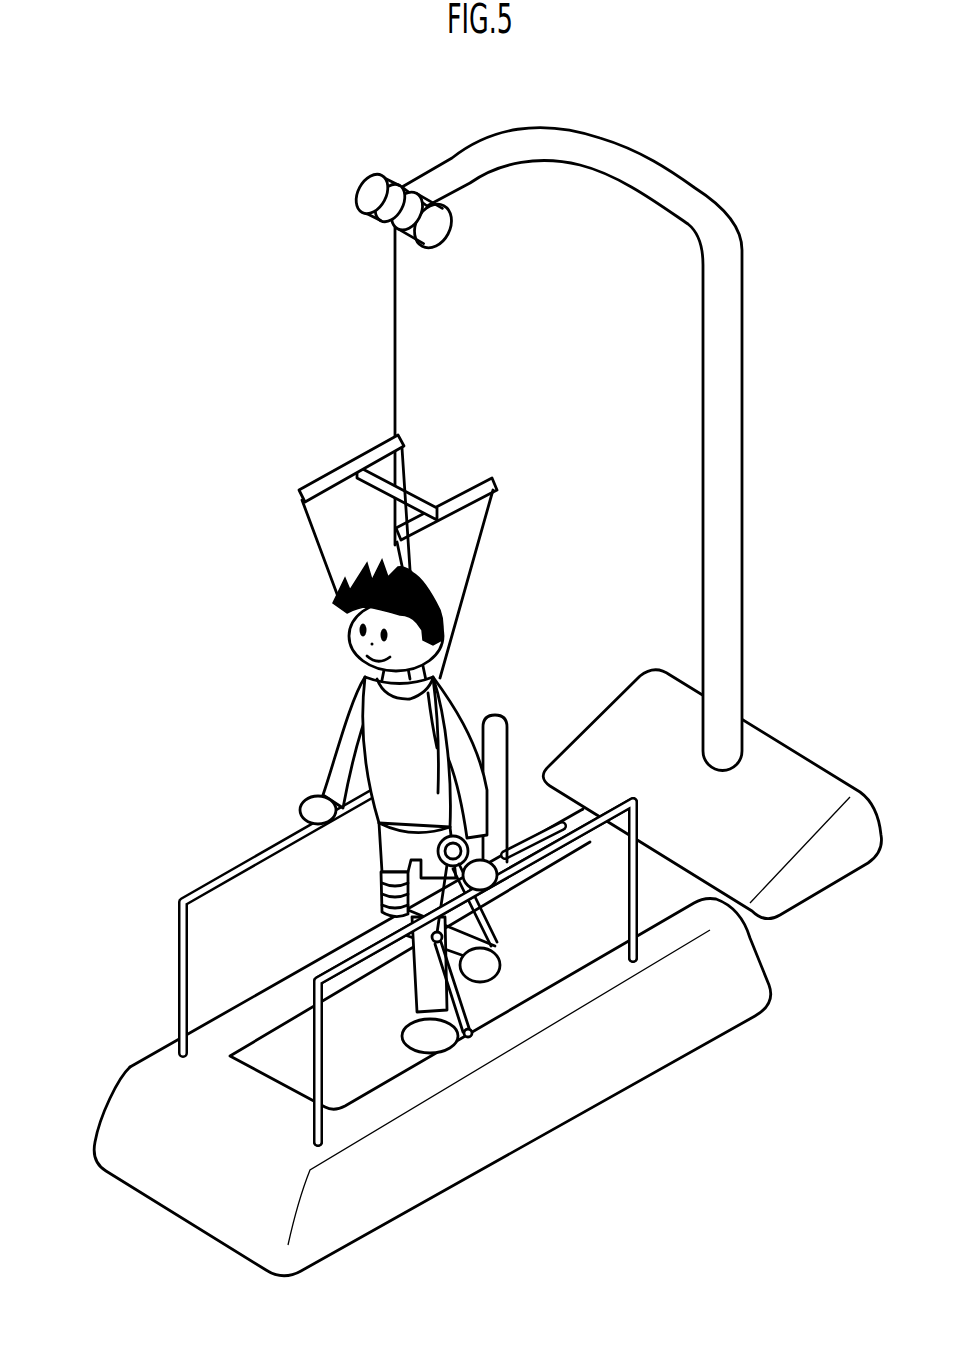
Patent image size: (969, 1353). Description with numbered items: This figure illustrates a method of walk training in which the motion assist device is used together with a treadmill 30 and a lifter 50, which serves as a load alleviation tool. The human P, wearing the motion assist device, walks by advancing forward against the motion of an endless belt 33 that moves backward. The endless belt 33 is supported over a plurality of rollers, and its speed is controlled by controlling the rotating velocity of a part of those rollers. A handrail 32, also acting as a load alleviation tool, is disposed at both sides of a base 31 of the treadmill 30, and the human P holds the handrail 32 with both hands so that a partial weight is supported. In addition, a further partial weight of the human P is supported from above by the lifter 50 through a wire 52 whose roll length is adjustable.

The treadmill 30 is at (132, 1028).
The base 31 is at (750, 970).
The handrail 32 is at (205, 883).
The endless belt 33 is at (667, 897).
The lifter 50 is at (692, 142).
The wire 52 is at (406, 343).
The human P is at (330, 677).